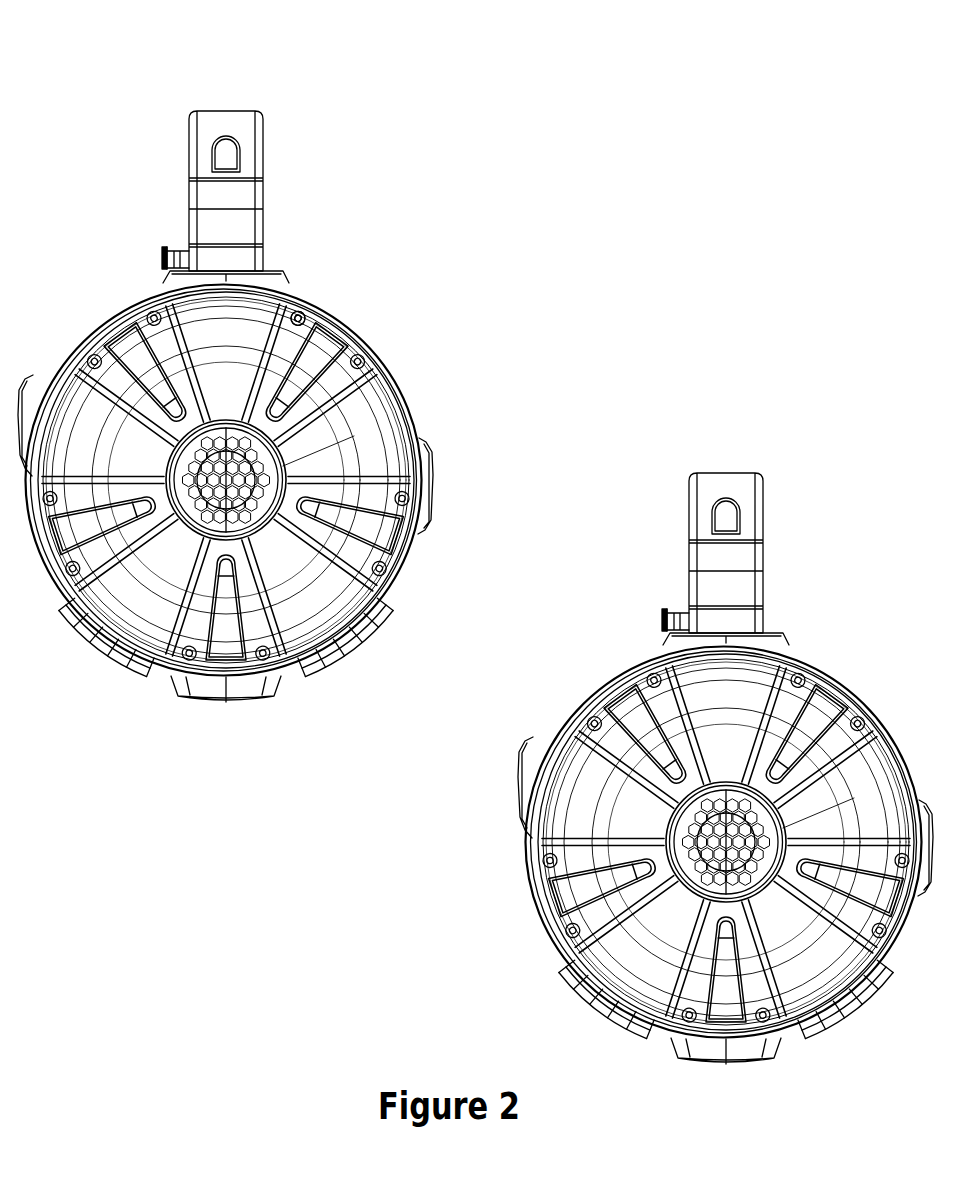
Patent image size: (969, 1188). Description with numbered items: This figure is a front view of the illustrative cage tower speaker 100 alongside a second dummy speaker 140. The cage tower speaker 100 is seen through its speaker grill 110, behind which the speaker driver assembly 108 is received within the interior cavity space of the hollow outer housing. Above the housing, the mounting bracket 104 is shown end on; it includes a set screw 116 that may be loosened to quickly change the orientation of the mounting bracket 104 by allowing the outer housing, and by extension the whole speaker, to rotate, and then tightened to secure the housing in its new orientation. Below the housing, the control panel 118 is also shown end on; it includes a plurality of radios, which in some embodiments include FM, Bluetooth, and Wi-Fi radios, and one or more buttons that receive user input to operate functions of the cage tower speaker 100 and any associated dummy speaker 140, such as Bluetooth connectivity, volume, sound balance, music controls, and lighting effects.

The cage tower speaker 100 is at (152, 74).
The mounting bracket 104 is at (259, 122).
The speaker driver assembly 108 is at (356, 437).
The speaker grill 110 is at (309, 318).
The set screw 116 is at (181, 251).
The control panel 118 is at (228, 694).
The dummy speaker 140 is at (707, 428).